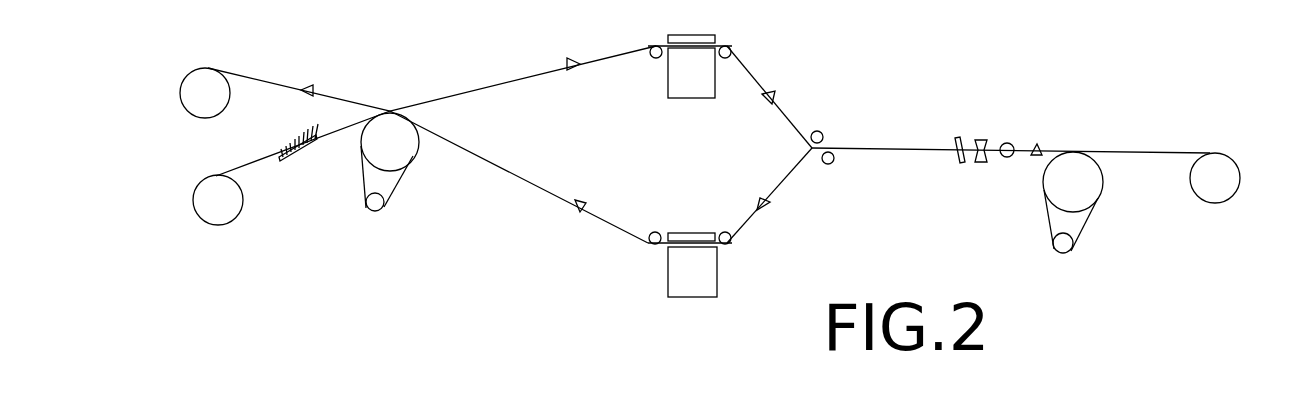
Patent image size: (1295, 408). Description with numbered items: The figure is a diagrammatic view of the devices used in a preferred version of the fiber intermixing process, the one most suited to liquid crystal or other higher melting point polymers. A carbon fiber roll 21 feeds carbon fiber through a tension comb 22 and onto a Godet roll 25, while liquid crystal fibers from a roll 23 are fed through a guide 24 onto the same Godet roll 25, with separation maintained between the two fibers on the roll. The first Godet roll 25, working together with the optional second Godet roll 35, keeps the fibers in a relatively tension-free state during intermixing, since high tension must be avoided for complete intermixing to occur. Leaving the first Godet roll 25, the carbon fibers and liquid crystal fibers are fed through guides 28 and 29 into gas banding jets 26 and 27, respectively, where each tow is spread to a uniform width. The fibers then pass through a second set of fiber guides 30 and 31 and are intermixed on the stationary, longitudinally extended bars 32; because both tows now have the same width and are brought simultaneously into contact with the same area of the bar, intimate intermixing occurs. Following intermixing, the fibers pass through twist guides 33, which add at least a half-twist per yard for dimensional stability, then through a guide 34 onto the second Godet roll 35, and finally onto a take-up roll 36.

The carbon fiber roll 21 is at (203, 222).
The tension comb 22 is at (300, 152).
The roll 23 is at (212, 68).
The guide 24 is at (313, 88).
The Godet roll 25 is at (417, 153).
The gas banding jet 26 is at (668, 278).
The gas banding jet 27 is at (668, 82).
The guide 28 is at (578, 209).
The guide 29 is at (568, 64).
The fiber guide 30 is at (763, 205).
The fiber guide 31 is at (765, 100).
The stationary longitudinally extended bars 32 is at (827, 164).
The twist guides 33 is at (981, 138).
The guide 34 is at (1037, 146).
The second Godet roll 35 is at (1048, 200).
The take-up roll 36 is at (1240, 172).